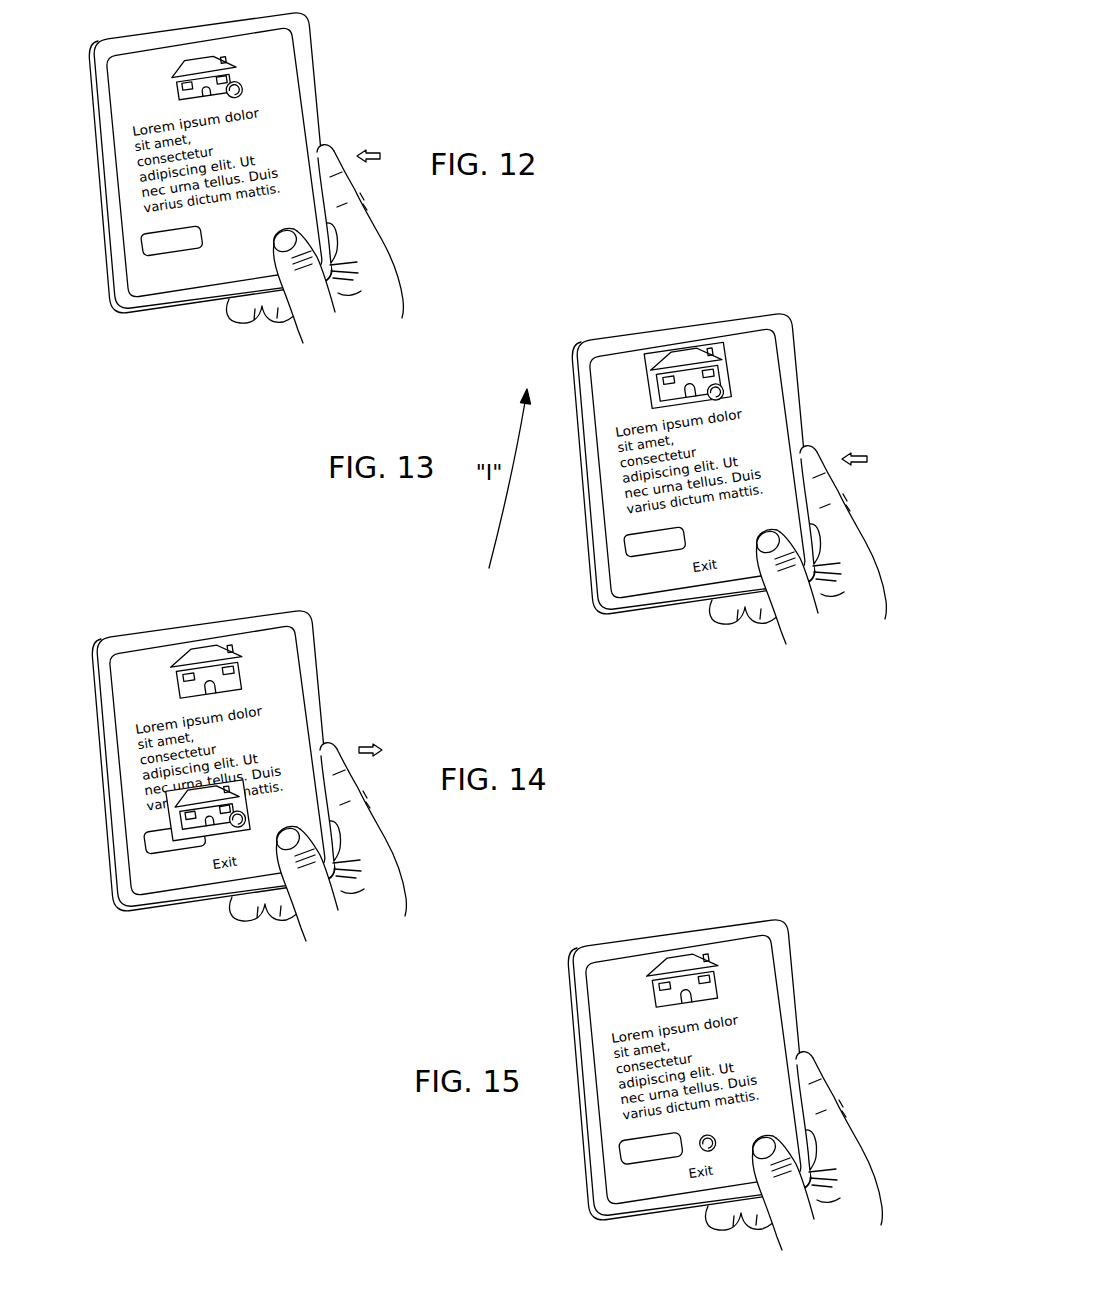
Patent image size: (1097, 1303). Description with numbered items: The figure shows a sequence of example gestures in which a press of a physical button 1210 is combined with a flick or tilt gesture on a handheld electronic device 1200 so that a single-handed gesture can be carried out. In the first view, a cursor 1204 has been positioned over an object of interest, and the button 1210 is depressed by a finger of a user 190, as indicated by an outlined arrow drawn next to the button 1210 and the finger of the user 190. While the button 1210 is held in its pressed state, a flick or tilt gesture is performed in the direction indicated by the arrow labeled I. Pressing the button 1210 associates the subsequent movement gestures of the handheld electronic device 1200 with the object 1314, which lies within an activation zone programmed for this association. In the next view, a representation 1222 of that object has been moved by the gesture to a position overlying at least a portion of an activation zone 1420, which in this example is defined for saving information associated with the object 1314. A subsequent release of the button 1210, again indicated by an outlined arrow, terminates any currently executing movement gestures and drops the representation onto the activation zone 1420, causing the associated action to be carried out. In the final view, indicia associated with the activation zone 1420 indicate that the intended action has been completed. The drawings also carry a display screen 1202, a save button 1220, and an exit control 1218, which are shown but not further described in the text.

In FIG. 12, the user 190 is at (377, 349).
In FIG. 13, the user 190 is at (864, 647).
In FIG. 14, the user 190 is at (385, 944).
In FIG. 15, the user 190 is at (855, 1251).
In FIG. 12, the handheld electronic device 1200 is at (88, 227).
In FIG. 13, the handheld electronic device 1200 is at (576, 584).
In FIG. 14, the handheld electronic device 1200 is at (90, 872).
In FIG. 15, the handheld electronic device 1200 is at (689, 1070).
In FIG. 12, the display screen 1202 is at (167, 288).
In FIG. 13, the display screen 1202 is at (762, 342).
In FIG. 14, the display screen 1202 is at (295, 662).
In FIG. 15, the display screen 1202 is at (760, 955).
In FIG. 12, the cursor 1204 is at (262, 71).
In FIG. 15, the cursor 1204 is at (688, 1158).
In FIG. 12, the physical button 1210 is at (316, 143).
In FIG. 13, the physical button 1210 is at (797, 432).
In FIG. 14, the physical button 1210 is at (328, 746).
In FIG. 15, the physical button 1210 is at (797, 1037).
In FIG. 12, the exit button 1218 is at (204, 279).
In FIG. 12, the save button 1220 is at (150, 248).
In FIG. 13, the save button 1220 is at (682, 545).
In FIG. 14, the representation 1222 is at (165, 793).
In FIG. 13, the object 1314 is at (651, 385).
In FIG. 14, the object 1314 is at (178, 682).
In FIG. 15, the object 1314 is at (652, 996).
In FIG. 14, the activation zone 1420 is at (155, 842).
In FIG. 15, the activation zone 1420 is at (623, 1143).